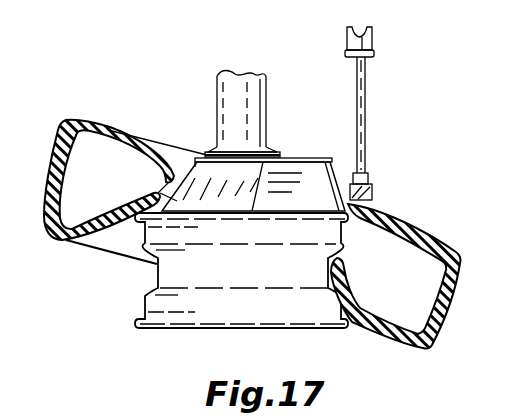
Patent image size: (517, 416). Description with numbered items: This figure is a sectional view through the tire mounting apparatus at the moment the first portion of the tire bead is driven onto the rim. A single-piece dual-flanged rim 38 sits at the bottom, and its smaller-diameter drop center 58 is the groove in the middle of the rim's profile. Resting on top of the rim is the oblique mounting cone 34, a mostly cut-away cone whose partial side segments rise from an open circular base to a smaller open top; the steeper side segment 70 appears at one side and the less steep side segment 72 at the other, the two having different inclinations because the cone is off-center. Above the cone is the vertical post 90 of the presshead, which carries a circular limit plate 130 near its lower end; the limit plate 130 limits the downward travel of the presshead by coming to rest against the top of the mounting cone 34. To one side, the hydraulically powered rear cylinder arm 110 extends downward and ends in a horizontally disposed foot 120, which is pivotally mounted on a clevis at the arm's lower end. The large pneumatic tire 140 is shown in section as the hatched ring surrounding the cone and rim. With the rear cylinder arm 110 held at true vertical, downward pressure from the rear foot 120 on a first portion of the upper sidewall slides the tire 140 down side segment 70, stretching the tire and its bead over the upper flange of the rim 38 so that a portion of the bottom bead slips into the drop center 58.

The oblique mounting cone 34 is at (285, 180).
The single-piece dual-flanged rim 38 is at (287, 300).
The drop center 58 is at (158, 278).
The side segment 70 is at (343, 200).
The side segment 72 is at (210, 202).
The vertical post 90 is at (248, 96).
The cylinder arm 110 is at (373, 42).
The foot 120 is at (370, 190).
The limit plate 130 is at (213, 147).
The pneumatic tire 140 is at (432, 333).